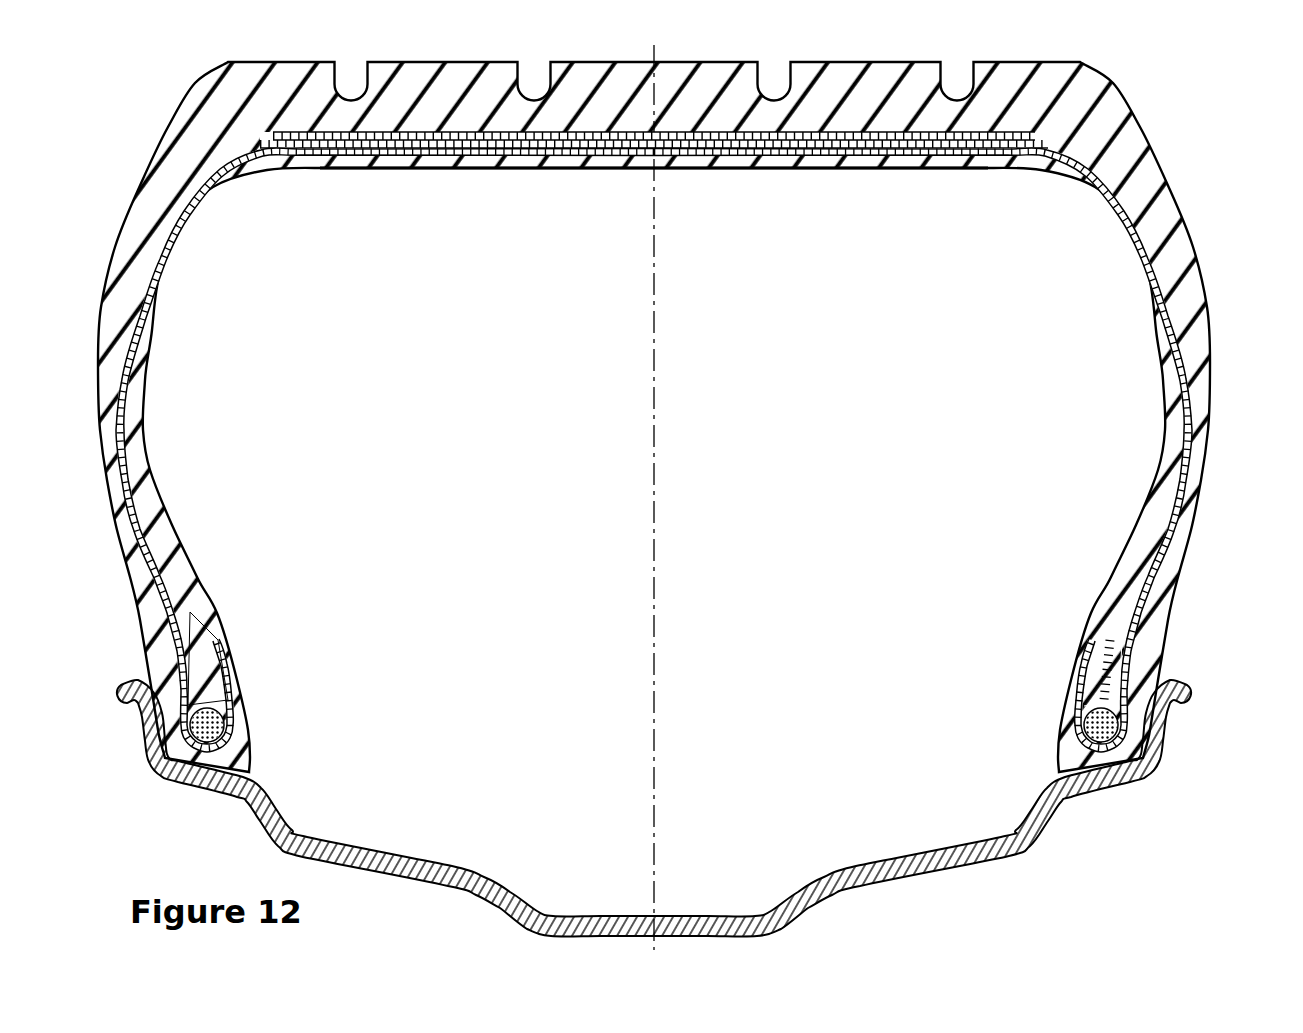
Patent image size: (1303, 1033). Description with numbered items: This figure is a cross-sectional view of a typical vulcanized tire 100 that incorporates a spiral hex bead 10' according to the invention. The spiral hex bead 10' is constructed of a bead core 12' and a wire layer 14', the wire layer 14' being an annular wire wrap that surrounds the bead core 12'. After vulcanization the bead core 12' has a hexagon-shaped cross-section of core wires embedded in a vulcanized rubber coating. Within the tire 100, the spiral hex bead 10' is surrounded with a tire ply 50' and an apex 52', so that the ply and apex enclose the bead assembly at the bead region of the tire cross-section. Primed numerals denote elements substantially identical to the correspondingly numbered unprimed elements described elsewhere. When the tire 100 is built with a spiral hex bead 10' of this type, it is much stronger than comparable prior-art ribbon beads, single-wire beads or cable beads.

The vulcanized tire 100 is at (1193, 140).
The spiral hex bead 10' is at (234, 652).
The bead core 12' is at (654, 728).
The wire layer 14' is at (385, 450).
The tire ply 50' is at (964, 450).
The apex 52' is at (1161, 659).